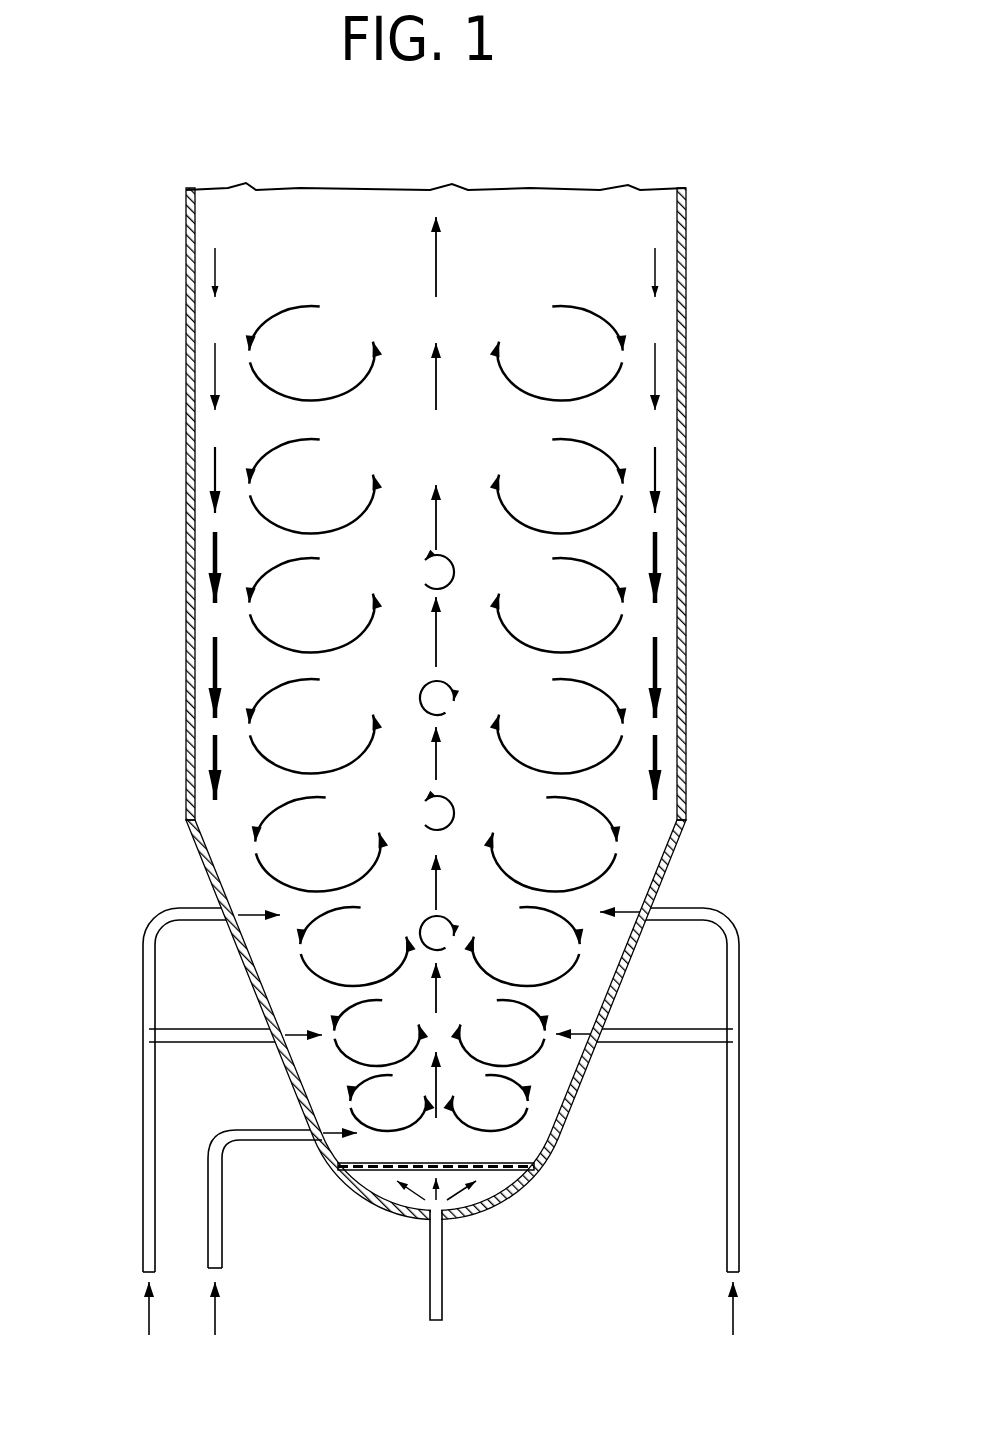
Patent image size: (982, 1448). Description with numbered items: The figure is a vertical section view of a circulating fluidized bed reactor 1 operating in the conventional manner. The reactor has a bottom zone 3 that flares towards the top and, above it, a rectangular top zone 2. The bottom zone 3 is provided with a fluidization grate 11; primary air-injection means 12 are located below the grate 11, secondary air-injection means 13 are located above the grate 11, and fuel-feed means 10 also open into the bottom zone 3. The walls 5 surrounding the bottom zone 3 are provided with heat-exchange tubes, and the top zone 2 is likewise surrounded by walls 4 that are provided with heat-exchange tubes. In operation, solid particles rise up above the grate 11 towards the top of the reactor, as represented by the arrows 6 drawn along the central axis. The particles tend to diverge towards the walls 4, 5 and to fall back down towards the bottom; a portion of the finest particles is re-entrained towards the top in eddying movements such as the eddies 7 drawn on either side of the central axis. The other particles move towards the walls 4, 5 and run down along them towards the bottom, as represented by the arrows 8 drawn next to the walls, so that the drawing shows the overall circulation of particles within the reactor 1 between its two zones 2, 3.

The circulating fluidized bed reactor 1 is at (702, 662).
The top zone 2 is at (465, 467).
The bottom zone 3 is at (467, 993).
The walls 4 is at (684, 481).
The walls 5 is at (631, 967).
The arrows 6 is at (437, 770).
The eddying movements 7 is at (336, 650).
The arrows 8 is at (213, 545).
The fuel-feed means 10 is at (254, 1135).
The fluidization grate 11 is at (480, 1163).
The primary air-injection means 12 is at (443, 1306).
The secondary air-injection means 13 is at (143, 1158).